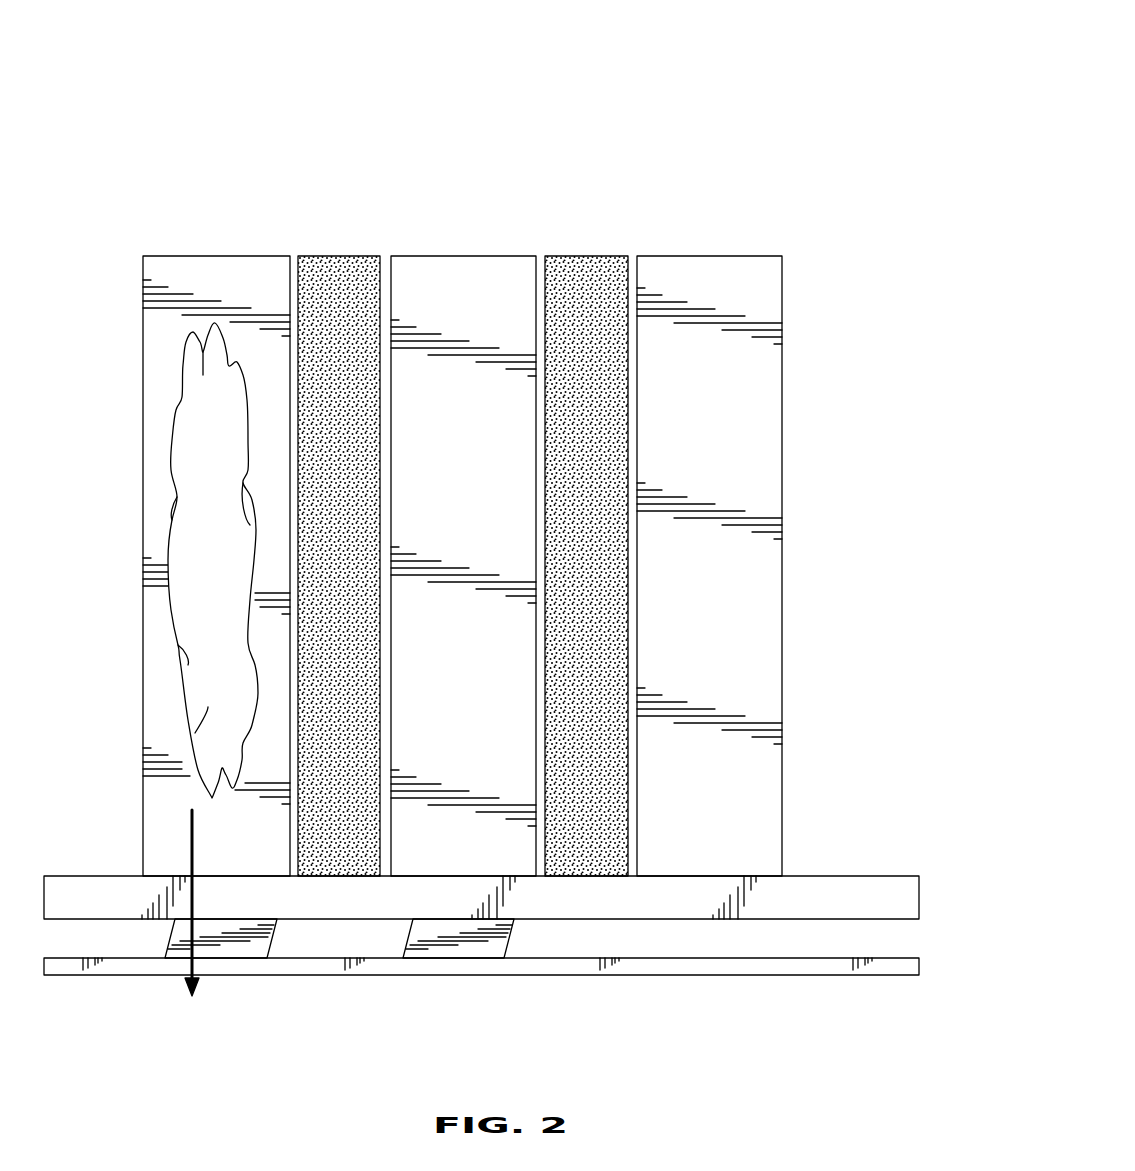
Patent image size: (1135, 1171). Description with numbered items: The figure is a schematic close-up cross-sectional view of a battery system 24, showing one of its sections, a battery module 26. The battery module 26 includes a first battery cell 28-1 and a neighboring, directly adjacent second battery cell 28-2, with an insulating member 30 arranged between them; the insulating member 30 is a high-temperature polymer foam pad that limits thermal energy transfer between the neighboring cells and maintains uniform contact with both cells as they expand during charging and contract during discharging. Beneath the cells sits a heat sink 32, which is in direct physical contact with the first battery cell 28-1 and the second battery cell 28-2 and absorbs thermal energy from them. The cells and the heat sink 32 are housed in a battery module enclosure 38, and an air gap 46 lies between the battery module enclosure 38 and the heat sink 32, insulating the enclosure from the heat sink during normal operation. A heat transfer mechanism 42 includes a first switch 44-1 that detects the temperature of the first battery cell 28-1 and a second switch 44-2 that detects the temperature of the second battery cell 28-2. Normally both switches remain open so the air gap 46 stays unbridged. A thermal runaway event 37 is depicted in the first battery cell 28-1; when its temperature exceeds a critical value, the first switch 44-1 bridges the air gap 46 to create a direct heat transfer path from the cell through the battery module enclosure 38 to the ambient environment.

The battery system 24 is at (846, 108).
The battery module 26 is at (426, 223).
The first battery cell 28-1 is at (230, 255).
The second battery cell 28-2 is at (484, 255).
The insulating member 30 is at (358, 255).
The heat sink 32 is at (919, 896).
The thermal runaway event 37 is at (222, 564).
The battery module enclosure 38 is at (919, 964).
The heat transfer mechanism 42 is at (465, 914).
The first switch 44-1 is at (216, 948).
The second switch 44-2 is at (457, 948).
The air gap 46 is at (763, 950).